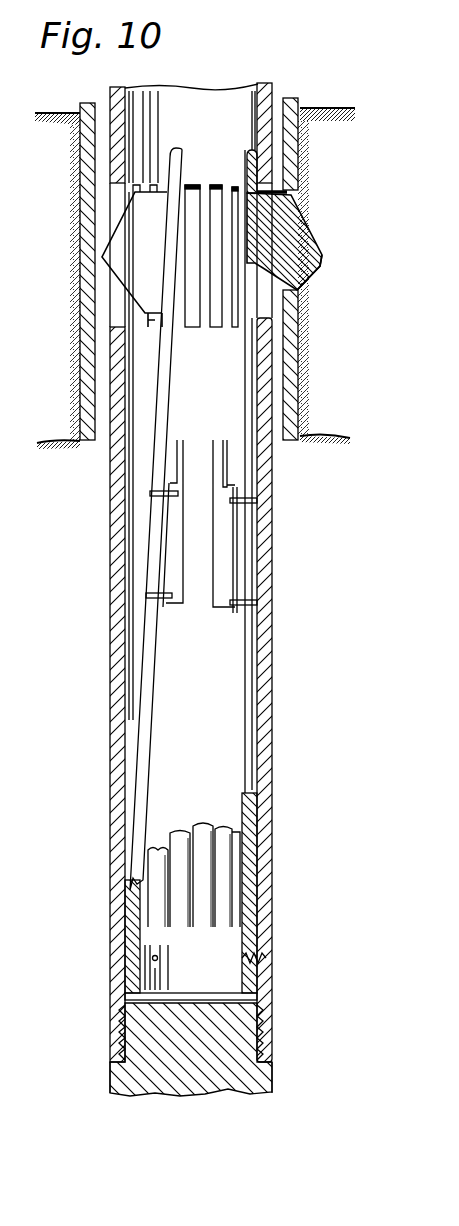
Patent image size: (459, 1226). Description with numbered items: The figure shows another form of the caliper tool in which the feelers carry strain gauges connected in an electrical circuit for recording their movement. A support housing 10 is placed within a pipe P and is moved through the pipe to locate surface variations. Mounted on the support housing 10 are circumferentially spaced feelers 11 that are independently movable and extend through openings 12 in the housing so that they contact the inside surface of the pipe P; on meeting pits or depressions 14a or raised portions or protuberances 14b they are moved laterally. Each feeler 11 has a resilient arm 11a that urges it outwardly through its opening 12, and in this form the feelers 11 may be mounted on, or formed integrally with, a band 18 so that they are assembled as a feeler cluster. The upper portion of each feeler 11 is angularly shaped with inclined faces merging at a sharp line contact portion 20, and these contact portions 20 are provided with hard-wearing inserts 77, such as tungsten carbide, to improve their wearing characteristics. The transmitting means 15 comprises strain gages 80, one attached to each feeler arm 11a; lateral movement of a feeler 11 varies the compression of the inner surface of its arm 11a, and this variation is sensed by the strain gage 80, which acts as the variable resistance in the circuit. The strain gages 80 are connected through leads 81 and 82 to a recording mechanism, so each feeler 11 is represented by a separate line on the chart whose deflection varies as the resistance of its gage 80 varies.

The support housing 10 is at (113, 722).
The feelers 11 is at (167, 350).
The feeler arms 11a is at (148, 647).
The openings 12 is at (192, 325).
The pits or depressions 14a is at (297, 193).
The raised portions or protuberances 14b is at (82, 270).
The transmitting means 15 is at (226, 441).
The band 18 is at (220, 942).
The contact portion 20 is at (322, 258).
The inserts 77 is at (300, 223).
The strain gages 80 is at (167, 540).
The lead 81 is at (176, 480).
The lead 82 is at (193, 480).
The pipe P is at (88, 310).